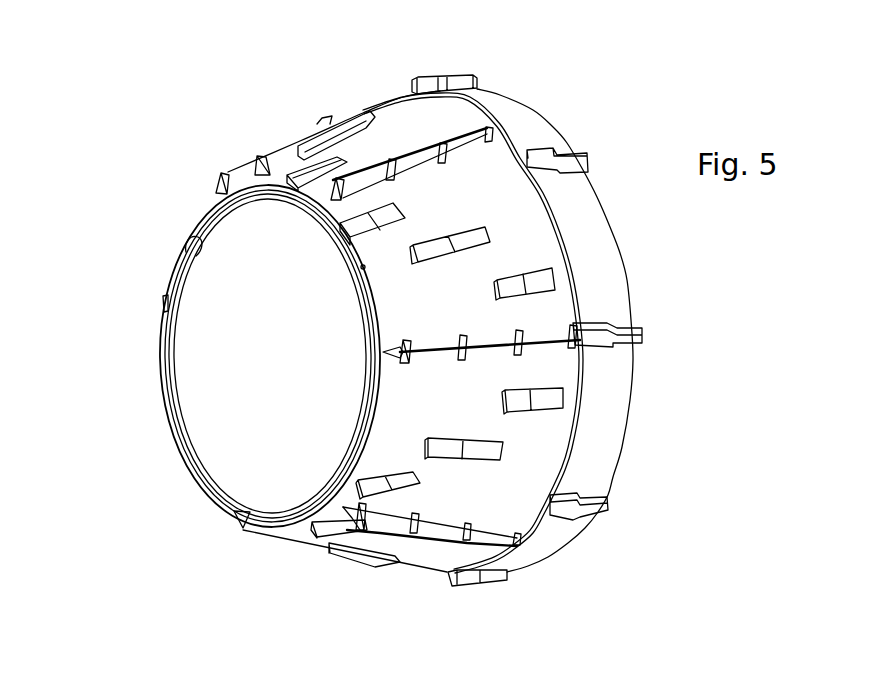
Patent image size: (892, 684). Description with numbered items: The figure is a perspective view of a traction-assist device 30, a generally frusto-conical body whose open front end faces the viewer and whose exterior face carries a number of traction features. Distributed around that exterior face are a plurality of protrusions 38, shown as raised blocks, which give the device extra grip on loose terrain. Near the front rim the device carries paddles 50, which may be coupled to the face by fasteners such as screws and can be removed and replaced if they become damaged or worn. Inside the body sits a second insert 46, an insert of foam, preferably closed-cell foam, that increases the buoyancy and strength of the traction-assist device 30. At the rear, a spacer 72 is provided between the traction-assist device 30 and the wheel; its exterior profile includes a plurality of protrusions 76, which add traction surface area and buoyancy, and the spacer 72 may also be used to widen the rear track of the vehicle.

The traction-assist device 30 is at (181, 253).
The protrusions 38 is at (330, 118).
The second insert 46 is at (207, 356).
The paddles 50 is at (228, 172).
The spacer 72 is at (535, 109).
The protrusions 76 is at (603, 508).